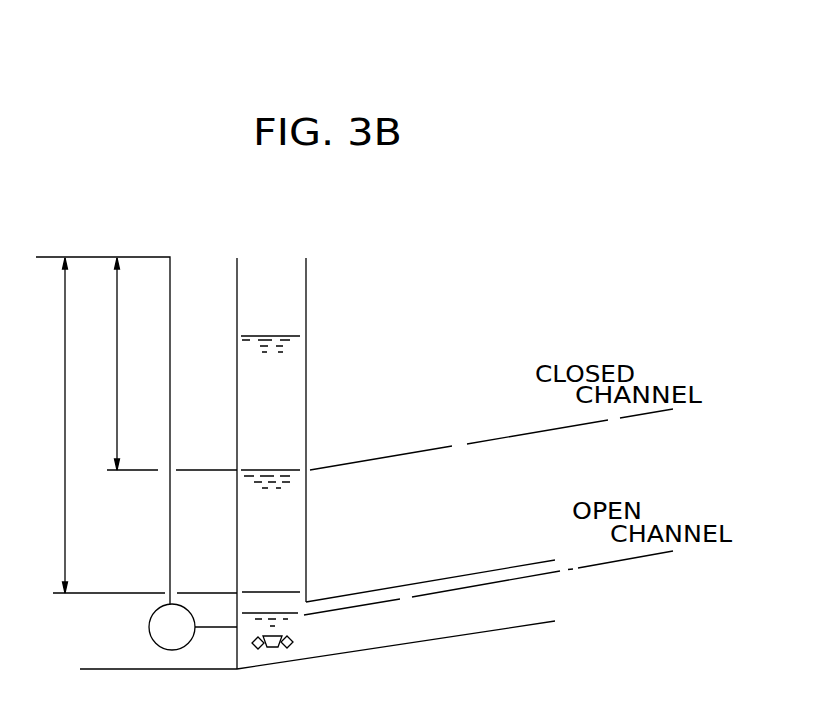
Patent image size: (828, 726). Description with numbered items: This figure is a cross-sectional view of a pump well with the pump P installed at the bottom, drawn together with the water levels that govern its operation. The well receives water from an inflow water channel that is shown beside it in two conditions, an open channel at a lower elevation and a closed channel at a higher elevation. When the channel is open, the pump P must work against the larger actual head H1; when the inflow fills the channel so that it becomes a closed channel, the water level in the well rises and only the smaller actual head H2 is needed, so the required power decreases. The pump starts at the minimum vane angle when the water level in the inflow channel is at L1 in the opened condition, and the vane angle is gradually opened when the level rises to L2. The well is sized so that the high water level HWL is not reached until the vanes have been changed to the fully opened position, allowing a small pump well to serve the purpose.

The actual head with water channel opened H1 is at (145, 425).
The actual head with water channel closed H2 is at (172, 364).
The high water level HWL is at (270, 335).
The water level L2 is at (271, 580).
The water level L1 is at (270, 609).
The pump P is at (193, 627).